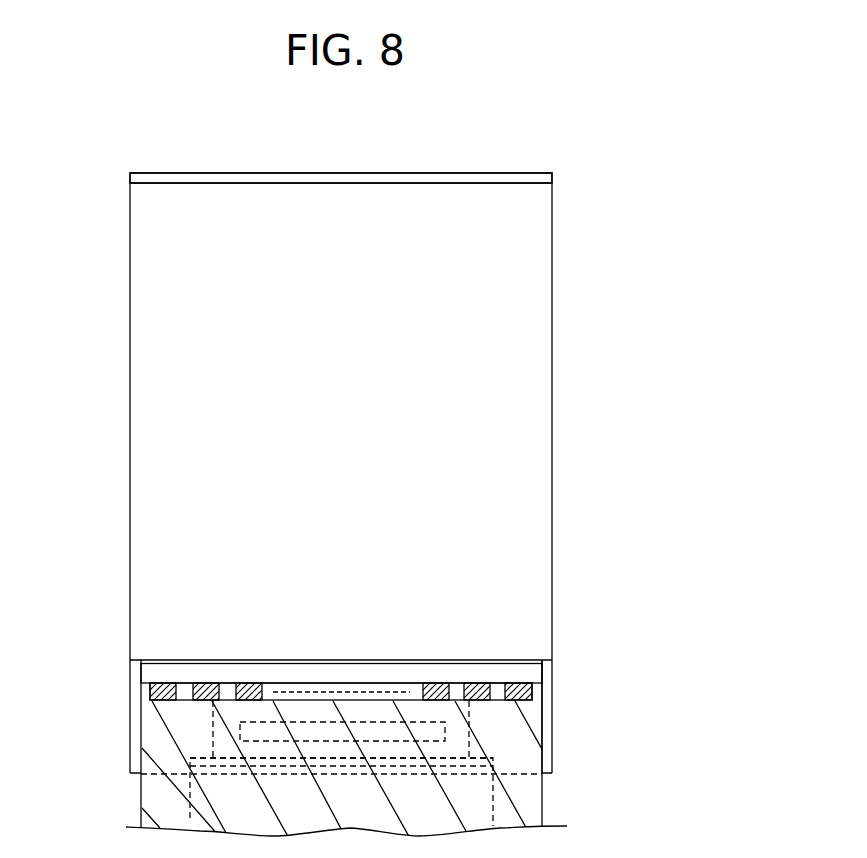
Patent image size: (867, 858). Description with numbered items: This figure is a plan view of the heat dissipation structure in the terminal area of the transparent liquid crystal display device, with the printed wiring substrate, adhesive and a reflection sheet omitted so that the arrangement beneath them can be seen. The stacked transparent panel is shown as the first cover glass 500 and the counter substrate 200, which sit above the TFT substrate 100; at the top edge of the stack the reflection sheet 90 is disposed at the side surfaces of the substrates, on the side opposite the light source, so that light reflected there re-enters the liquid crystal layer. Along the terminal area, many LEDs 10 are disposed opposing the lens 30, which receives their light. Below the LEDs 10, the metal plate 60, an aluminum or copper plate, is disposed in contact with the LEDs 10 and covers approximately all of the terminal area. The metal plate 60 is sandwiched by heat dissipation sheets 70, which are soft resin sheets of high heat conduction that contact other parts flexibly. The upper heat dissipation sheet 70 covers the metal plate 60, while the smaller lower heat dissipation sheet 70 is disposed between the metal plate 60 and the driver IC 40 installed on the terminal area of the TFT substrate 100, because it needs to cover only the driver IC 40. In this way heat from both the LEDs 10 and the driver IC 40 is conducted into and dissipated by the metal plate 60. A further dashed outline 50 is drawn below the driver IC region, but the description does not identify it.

The first cover glass 500 is at (404, 500).
The counter substrate 200 is at (553, 413).
The reflection sheet 90 is at (488, 172).
The lens 30 is at (147, 672).
The LED 10 is at (150, 693).
The TFT substrate 100 is at (553, 690).
The metal plate 60 is at (532, 797).
The heat dissipation sheet 70 is at (469, 737).
The driver IC 40 is at (240, 731).
The second wiring 50 is at (190, 810).